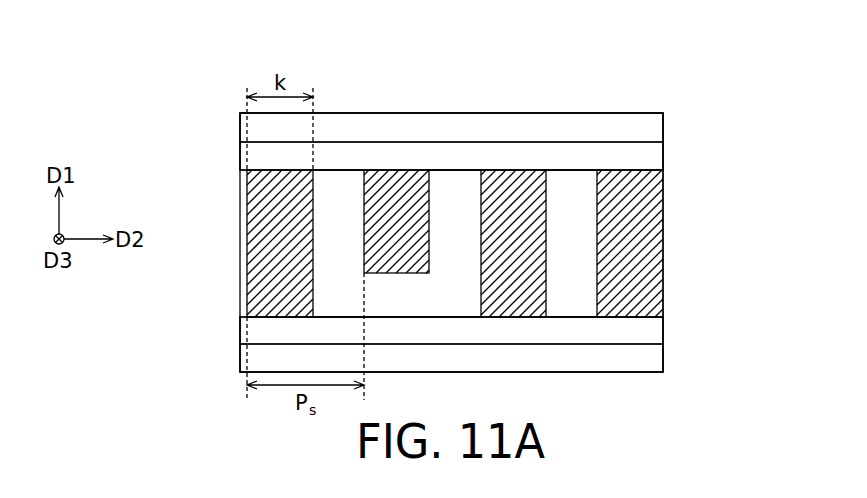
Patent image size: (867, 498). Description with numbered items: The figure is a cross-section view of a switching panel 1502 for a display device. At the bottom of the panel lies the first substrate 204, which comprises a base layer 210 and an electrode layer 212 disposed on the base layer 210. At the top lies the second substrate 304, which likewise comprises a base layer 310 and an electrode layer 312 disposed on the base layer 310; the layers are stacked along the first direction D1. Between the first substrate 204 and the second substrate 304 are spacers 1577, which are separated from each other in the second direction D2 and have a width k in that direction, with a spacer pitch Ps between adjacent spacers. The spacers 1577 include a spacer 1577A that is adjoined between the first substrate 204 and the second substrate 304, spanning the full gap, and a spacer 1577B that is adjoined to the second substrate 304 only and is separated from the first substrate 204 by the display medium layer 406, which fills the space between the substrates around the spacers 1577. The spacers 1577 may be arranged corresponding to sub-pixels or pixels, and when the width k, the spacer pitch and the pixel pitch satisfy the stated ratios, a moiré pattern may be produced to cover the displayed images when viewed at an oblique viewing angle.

The switching panel 1502 is at (240, 63).
The spacers 1577 is at (516, 176).
The spacer 1577A is at (504, 178).
The spacer 1577B is at (398, 178).
The second substrate 304 is at (745, 108).
The base layer 310 is at (653, 127).
The electrode layer 312 is at (653, 156).
The display medium layer 406 is at (579, 243).
The first substrate 204 is at (745, 313).
The electrode layer 212 is at (653, 333).
The base layer 210 is at (653, 363).